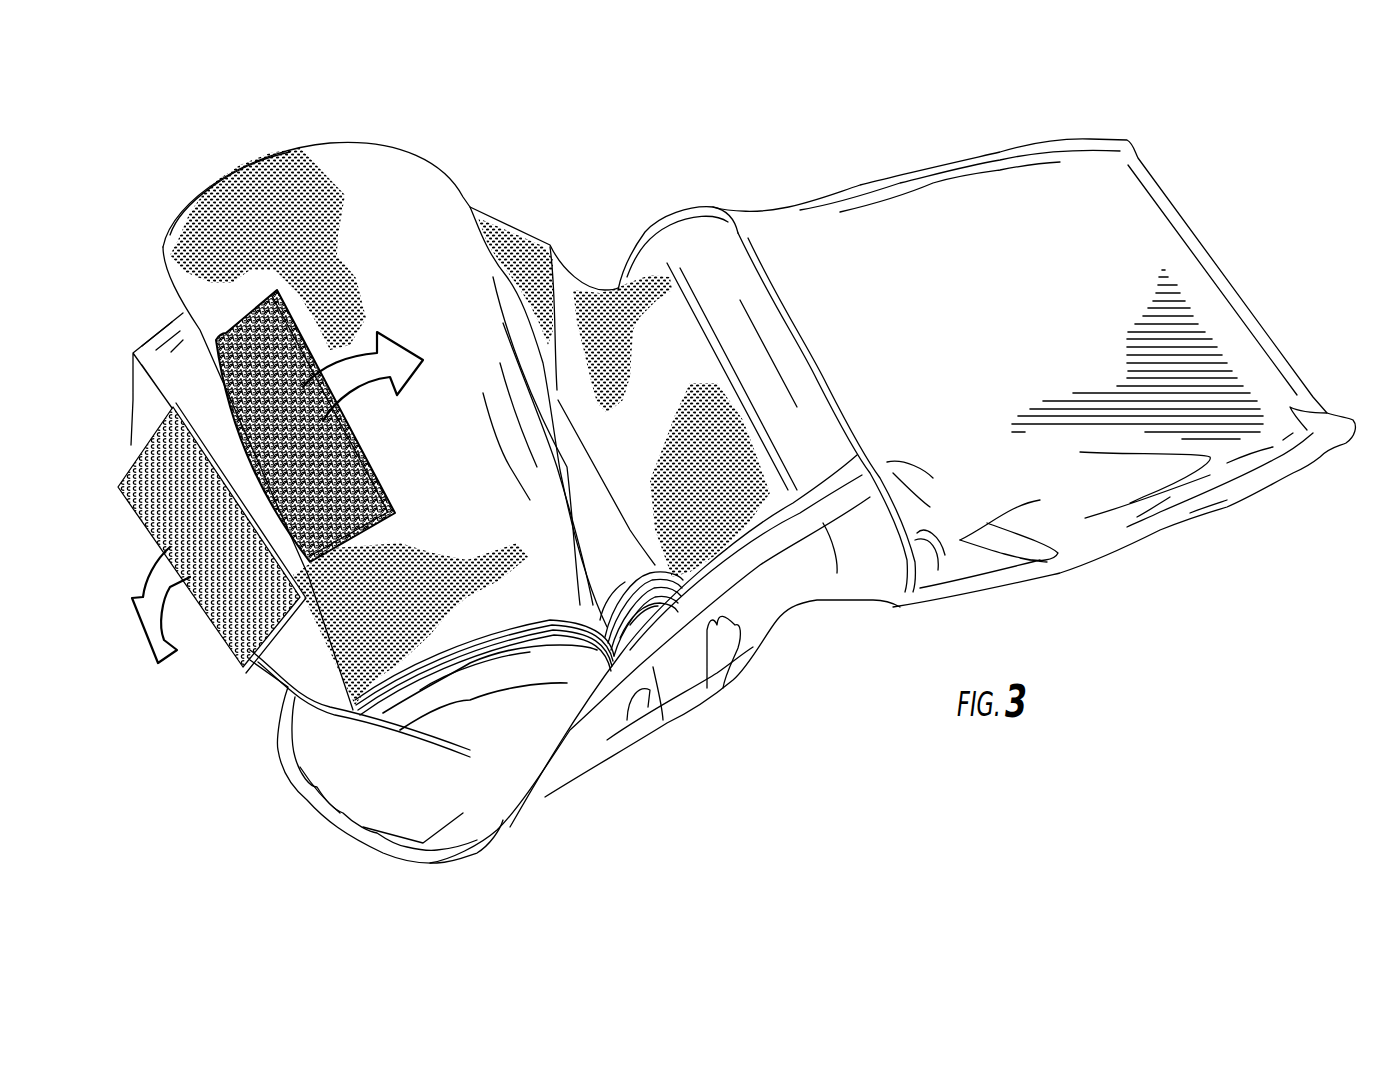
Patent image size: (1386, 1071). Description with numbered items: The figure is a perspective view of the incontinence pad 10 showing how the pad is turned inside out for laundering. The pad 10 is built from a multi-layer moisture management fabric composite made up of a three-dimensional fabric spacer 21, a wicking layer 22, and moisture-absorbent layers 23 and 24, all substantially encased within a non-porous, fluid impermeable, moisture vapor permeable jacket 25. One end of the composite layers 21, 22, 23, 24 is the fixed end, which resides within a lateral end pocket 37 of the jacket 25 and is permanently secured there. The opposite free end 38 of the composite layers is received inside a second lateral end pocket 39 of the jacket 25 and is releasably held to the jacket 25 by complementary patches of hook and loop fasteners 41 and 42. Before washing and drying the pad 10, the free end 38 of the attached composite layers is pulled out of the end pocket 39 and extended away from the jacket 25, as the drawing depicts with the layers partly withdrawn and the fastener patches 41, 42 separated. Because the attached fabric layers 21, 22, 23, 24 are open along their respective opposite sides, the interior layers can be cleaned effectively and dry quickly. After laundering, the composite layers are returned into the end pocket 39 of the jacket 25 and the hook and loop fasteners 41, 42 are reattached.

The incontinence pad 10 is at (580, 228).
The three-dimensional fabric spacer 21 is at (430, 197).
The wicking layer 22 is at (560, 643).
The moisture-absorbent layer 23 is at (543, 660).
The moisture-absorbent layer 24 is at (496, 683).
The jacket 25 is at (800, 586).
The lateral end pocket 37 is at (757, 272).
The free end 38 is at (211, 190).
The second lateral end pocket 39 is at (440, 733).
The hook and loop fastener patch 41 is at (135, 450).
The hook and loop fastener patch 42 is at (237, 322).